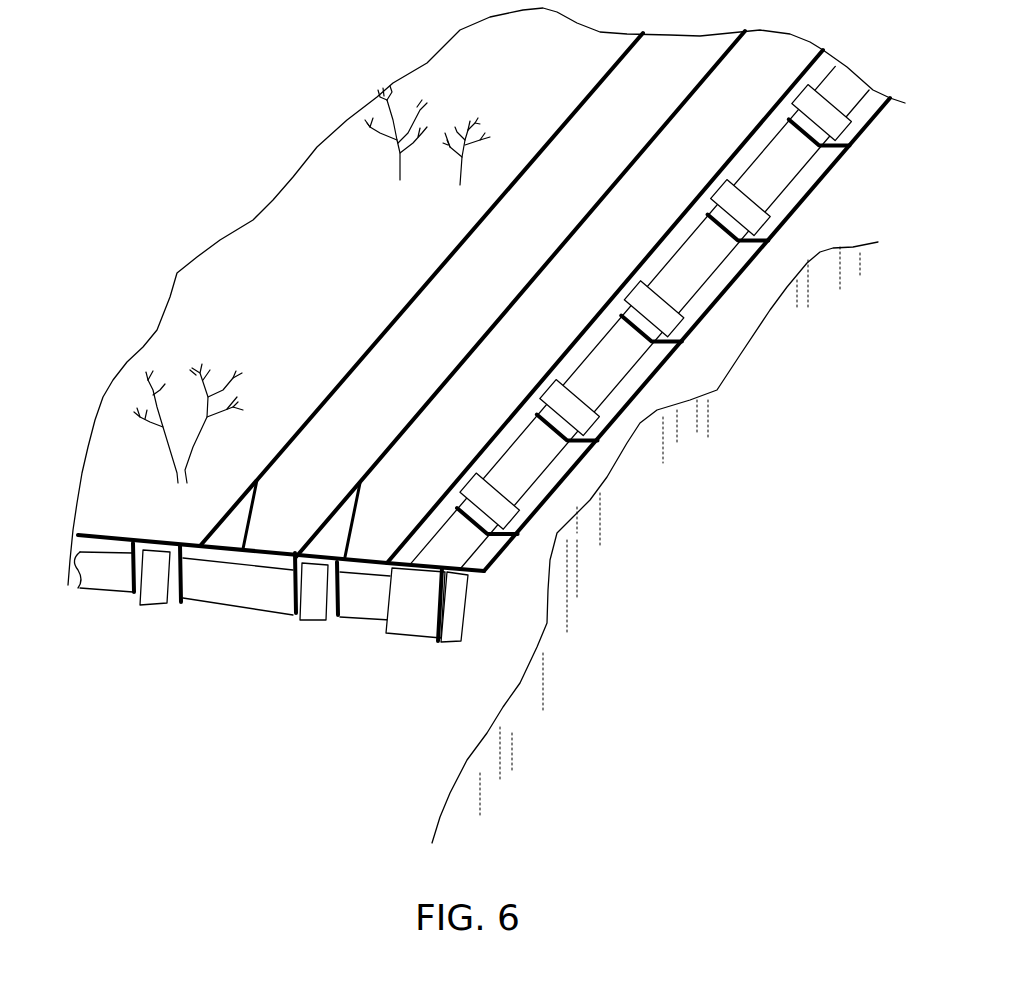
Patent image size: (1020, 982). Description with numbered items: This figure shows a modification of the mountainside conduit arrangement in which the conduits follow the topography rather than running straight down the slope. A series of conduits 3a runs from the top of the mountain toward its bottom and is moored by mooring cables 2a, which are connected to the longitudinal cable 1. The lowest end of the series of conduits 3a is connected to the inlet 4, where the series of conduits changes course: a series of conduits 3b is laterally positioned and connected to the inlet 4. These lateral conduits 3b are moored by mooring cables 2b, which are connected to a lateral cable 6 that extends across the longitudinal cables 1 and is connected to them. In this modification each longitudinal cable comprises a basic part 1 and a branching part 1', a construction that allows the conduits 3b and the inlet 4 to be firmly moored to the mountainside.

The longitudinal cable 1 is at (545, 301).
The branching part 1' is at (321, 508).
The mooring cable 2a is at (806, 133).
The mooring cable 2b is at (185, 600).
The conduit 3a is at (708, 278).
The conduit 3b is at (252, 603).
The inlet 4 is at (417, 638).
The lateral cable 6 is at (263, 550).